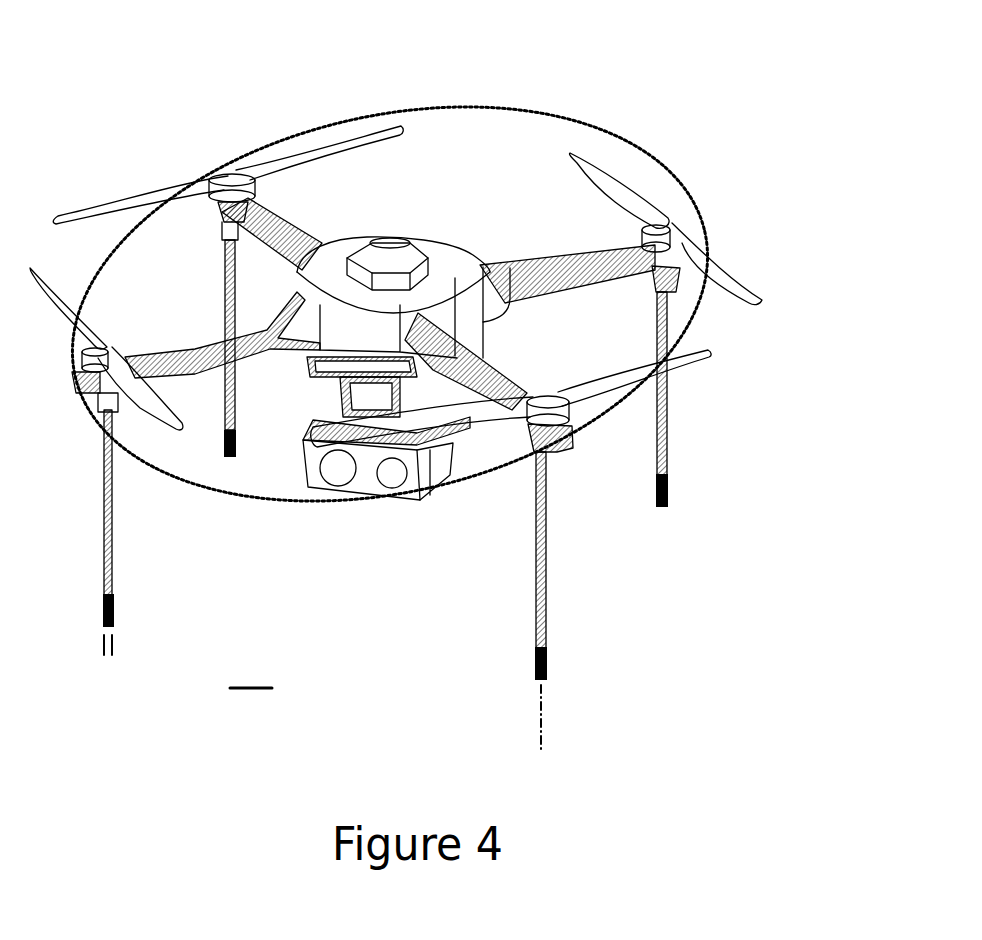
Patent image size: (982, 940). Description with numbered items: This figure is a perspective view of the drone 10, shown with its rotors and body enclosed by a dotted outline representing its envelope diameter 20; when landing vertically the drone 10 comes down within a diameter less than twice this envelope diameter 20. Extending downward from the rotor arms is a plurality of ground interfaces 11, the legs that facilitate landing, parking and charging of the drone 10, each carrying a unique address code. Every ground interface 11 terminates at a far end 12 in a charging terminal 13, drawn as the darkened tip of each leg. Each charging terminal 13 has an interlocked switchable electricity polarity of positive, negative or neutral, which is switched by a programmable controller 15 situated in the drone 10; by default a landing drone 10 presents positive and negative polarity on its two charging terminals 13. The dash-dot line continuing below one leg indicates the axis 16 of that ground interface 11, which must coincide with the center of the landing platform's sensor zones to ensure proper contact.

The drone 10 is at (340, 100).
The envelope diameter 20 is at (598, 128).
The ground interface 11 is at (667, 463).
The charging terminal 13 is at (115, 607).
The programmable controller 15 is at (107, 653).
The far end 12 is at (251, 670).
The axis 16 is at (540, 712).